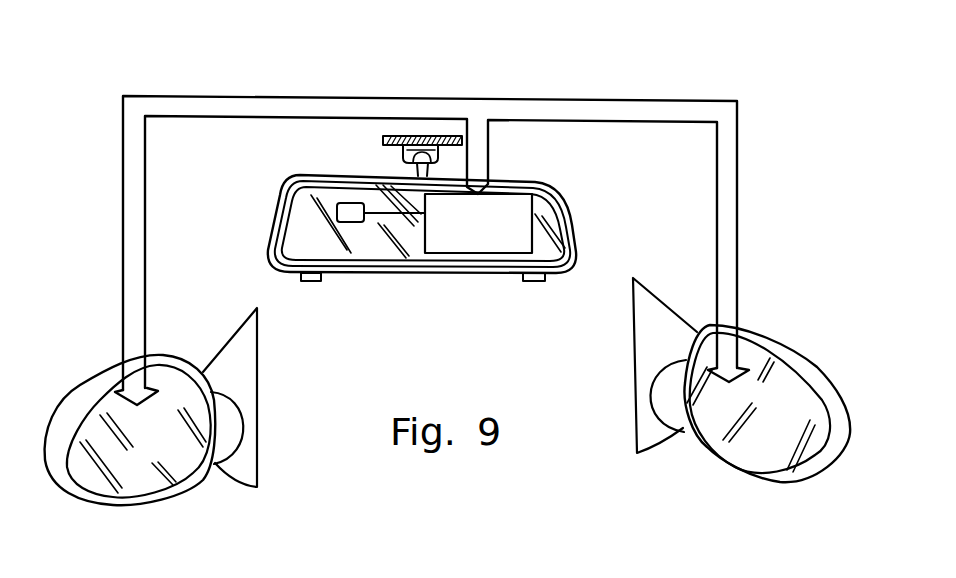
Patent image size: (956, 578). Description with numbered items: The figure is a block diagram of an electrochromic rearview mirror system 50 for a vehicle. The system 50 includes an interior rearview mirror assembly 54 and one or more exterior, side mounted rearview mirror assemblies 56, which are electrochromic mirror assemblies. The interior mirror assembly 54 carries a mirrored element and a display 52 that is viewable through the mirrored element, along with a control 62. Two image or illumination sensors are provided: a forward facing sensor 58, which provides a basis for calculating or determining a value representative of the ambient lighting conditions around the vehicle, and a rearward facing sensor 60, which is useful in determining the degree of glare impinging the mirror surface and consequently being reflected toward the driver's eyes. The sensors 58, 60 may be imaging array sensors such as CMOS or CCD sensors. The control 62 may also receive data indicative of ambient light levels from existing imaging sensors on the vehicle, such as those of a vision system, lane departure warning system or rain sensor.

The electrochromic rearview mirror system 50 is at (661, 85).
The display 52 is at (355, 222).
The interior rearview mirror assembly 54 is at (579, 249).
The exterior side mounted rearview mirror assembly 56 is at (72, 393).
The forward facing sensor 58 is at (309, 282).
The rearward facing sensor 60 is at (531, 282).
The control 62 is at (439, 253).